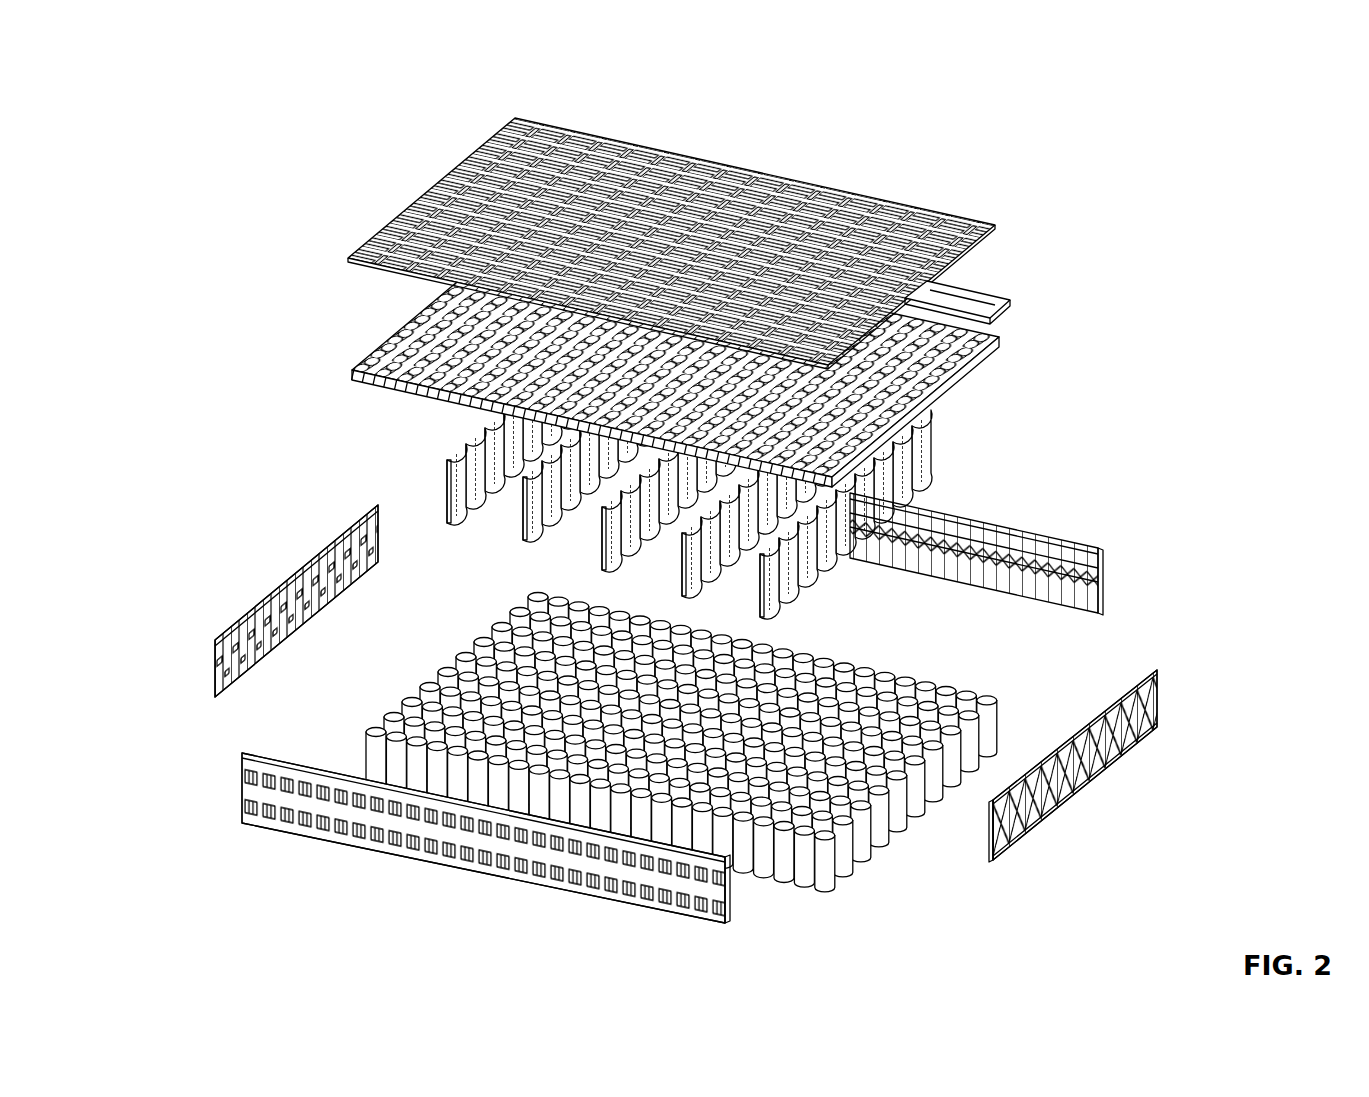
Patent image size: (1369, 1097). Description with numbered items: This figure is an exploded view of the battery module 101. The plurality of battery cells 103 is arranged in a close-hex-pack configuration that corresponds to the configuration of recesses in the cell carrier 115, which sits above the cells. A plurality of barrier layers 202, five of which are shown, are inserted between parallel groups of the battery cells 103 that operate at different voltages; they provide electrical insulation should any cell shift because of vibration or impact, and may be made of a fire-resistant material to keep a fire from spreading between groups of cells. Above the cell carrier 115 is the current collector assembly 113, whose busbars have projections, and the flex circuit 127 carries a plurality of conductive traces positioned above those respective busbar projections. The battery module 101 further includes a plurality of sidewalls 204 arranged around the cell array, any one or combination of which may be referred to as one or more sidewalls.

The battery module 101 is at (173, 88).
The battery cells 103 is at (990, 713).
The current collector assembly 113 is at (932, 215).
The cell carrier 115 is at (998, 340).
The flex circuit 127 is at (963, 257).
The barrier layers 202 is at (447, 462).
The sidewalls 204 is at (226, 636).